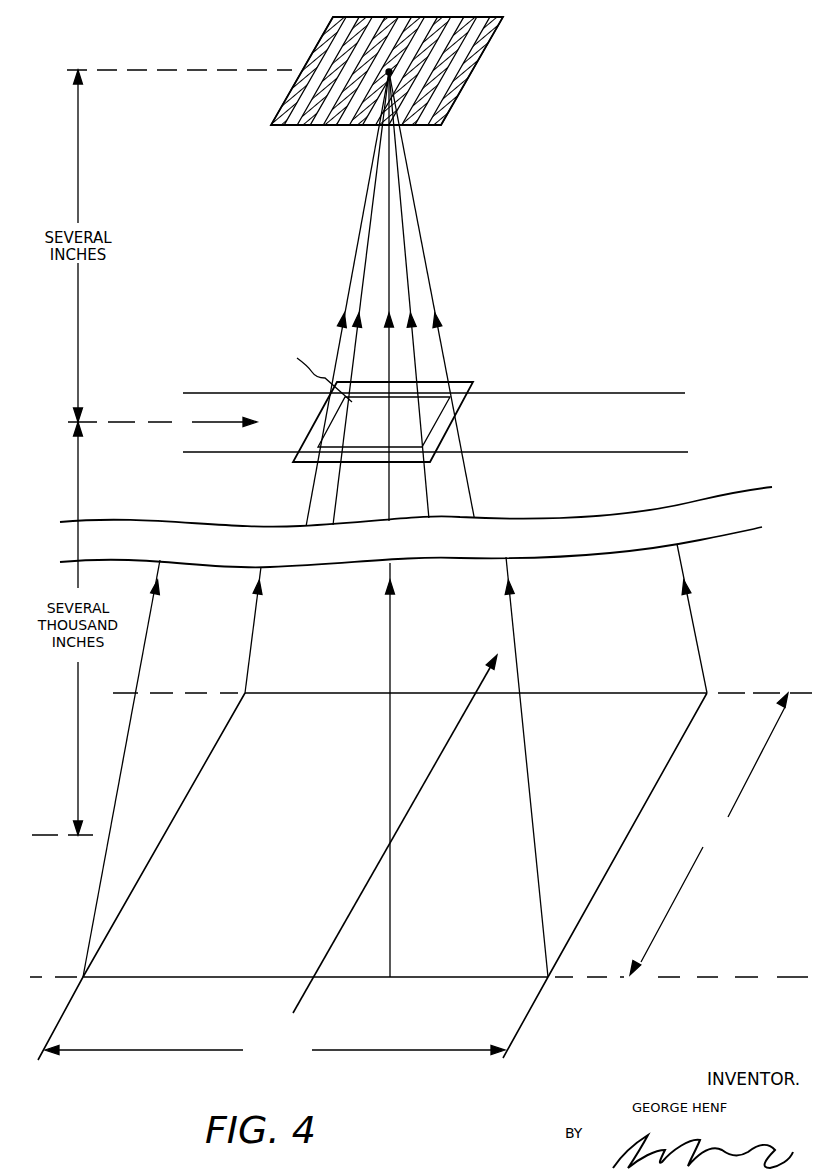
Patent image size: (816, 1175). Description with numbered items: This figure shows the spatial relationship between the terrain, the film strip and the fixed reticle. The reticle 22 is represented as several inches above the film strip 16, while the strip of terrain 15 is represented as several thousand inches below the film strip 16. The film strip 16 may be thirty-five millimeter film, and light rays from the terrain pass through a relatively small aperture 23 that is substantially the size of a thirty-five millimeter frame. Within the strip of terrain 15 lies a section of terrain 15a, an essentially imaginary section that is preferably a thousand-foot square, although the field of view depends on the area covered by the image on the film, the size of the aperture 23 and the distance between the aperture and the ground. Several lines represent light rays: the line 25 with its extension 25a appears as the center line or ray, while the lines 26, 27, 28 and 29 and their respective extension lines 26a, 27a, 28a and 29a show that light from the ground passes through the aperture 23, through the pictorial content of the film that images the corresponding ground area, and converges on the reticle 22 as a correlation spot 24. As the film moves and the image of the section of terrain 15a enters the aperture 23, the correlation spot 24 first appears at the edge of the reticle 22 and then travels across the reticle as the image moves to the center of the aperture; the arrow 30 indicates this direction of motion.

The reticle 22 is at (488, 47).
The correlation spot 24 is at (396, 78).
The center line extension 25a is at (391, 166).
The extension line 26a is at (360, 221).
The extension line 27a is at (375, 168).
The extension line 28a is at (400, 192).
The extension line 29a is at (418, 222).
The aperture 23 is at (437, 400).
The film strip 16 is at (566, 391).
The center line 25 is at (391, 634).
The light ray line 26 is at (149, 634).
The light ray line 27 is at (254, 634).
The light ray line 28 is at (515, 634).
The light ray line 29 is at (697, 634).
The section of terrain 15a is at (245, 919).
The strip of terrain 15 is at (771, 916).
The direction of travel arrow 30 is at (297, 1003).